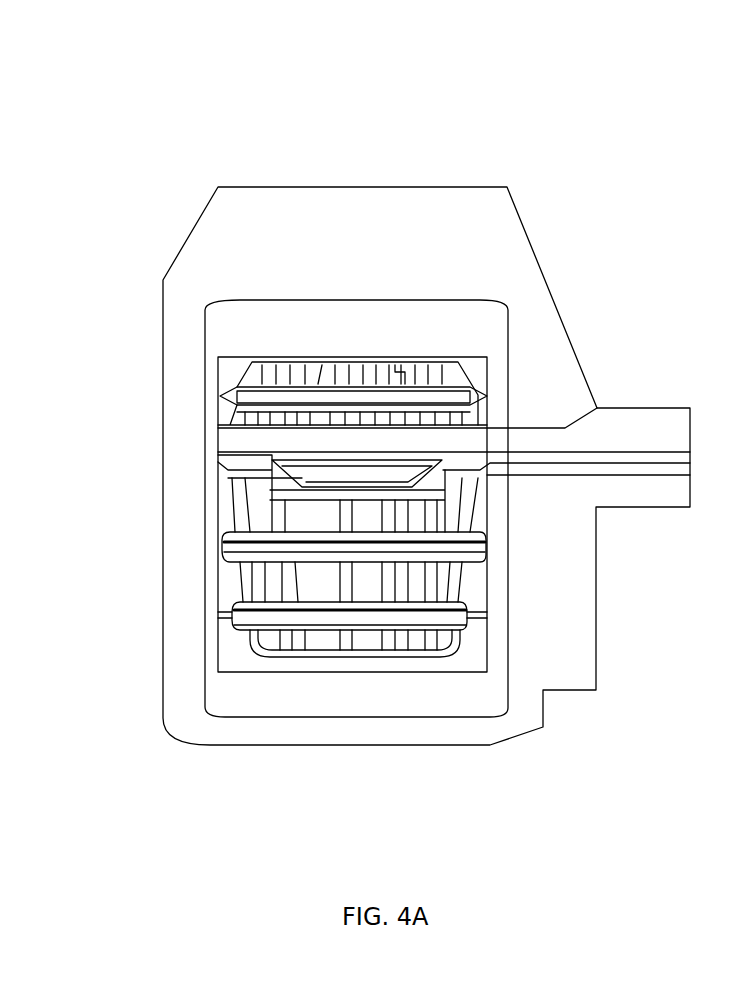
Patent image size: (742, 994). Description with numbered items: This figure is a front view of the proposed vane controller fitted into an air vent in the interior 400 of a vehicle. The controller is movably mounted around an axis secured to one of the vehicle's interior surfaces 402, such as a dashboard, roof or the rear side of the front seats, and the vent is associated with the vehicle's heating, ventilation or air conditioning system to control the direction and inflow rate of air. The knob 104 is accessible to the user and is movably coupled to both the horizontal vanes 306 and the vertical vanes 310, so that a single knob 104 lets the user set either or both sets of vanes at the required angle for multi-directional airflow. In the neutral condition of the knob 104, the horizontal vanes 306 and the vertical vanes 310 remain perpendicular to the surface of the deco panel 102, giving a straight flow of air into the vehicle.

The interior 400 is at (198, 56).
The interior surfaces 402 is at (206, 383).
The deco panel 102 is at (567, 452).
The knob 104 is at (316, 467).
The vertical vanes 310 is at (285, 517).
The horizontal vanes 306 is at (240, 611).